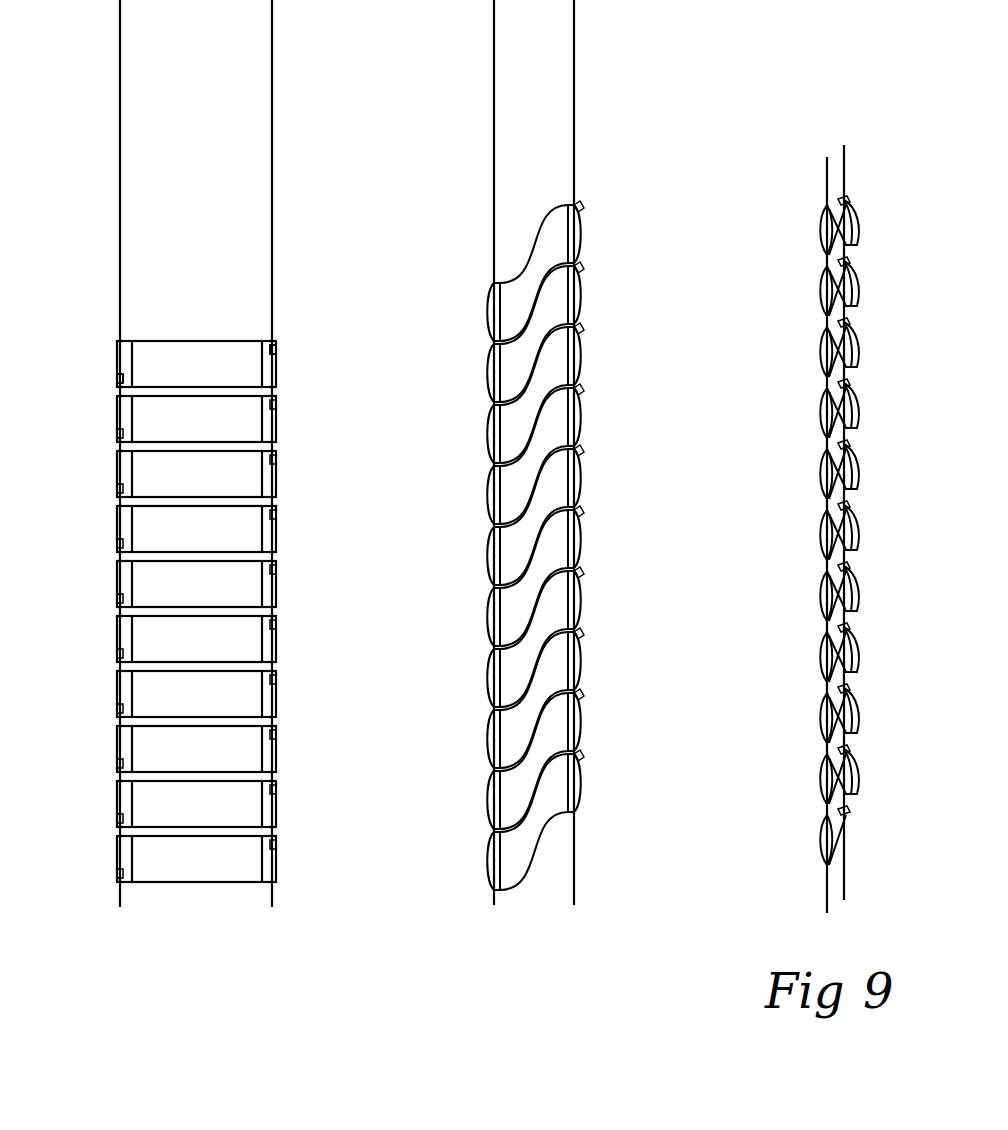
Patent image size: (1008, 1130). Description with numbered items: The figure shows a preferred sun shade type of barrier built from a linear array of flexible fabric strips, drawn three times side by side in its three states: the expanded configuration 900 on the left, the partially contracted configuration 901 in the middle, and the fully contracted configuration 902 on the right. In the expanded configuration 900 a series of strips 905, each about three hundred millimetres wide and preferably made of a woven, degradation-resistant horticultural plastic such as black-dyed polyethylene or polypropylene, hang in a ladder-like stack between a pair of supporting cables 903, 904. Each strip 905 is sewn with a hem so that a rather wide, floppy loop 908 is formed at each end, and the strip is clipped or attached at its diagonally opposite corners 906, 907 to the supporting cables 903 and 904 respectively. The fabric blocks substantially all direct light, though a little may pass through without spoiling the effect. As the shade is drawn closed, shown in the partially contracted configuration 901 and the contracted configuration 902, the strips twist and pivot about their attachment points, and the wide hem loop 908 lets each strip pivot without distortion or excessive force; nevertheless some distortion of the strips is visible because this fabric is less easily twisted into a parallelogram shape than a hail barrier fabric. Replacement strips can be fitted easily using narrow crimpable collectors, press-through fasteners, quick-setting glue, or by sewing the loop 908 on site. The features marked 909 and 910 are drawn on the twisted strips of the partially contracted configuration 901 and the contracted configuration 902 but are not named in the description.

The expanded configuration 900 is at (205, 481).
The partially contracted configuration 901 is at (526, 452).
The contracted configuration 902 is at (797, 529).
The supporting cable 903 is at (120, 198).
The supporting cable 904 is at (272, 180).
The strip 905 is at (218, 341).
The corner attachment 906 is at (352, 348).
The corner attachment 907 is at (118, 381).
The loop 908 is at (268, 884).
The pivot marker on twisted slat 909 is at (562, 232).
The slat in closed position 910 is at (818, 318).